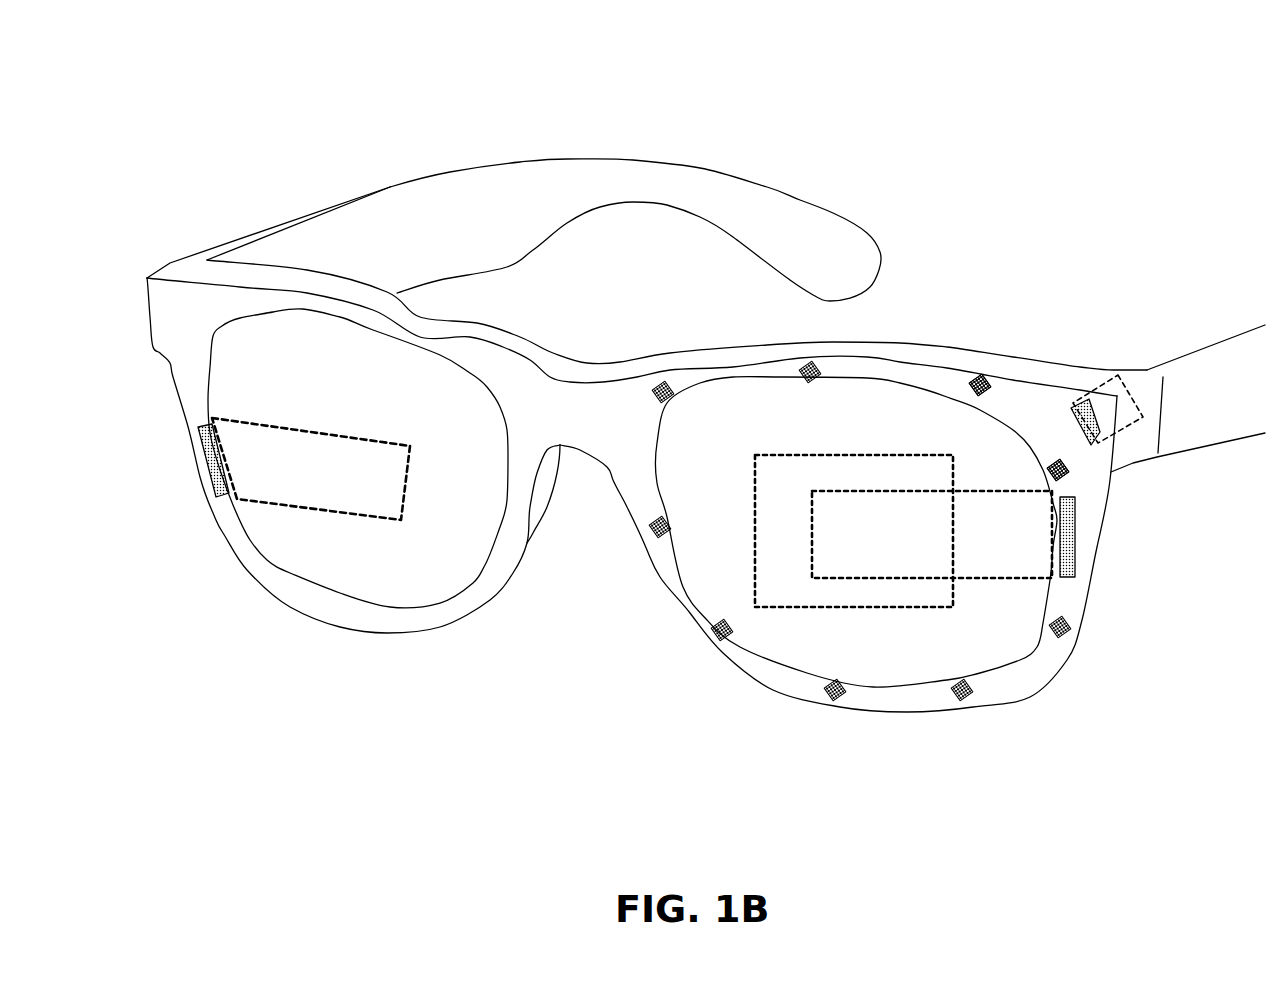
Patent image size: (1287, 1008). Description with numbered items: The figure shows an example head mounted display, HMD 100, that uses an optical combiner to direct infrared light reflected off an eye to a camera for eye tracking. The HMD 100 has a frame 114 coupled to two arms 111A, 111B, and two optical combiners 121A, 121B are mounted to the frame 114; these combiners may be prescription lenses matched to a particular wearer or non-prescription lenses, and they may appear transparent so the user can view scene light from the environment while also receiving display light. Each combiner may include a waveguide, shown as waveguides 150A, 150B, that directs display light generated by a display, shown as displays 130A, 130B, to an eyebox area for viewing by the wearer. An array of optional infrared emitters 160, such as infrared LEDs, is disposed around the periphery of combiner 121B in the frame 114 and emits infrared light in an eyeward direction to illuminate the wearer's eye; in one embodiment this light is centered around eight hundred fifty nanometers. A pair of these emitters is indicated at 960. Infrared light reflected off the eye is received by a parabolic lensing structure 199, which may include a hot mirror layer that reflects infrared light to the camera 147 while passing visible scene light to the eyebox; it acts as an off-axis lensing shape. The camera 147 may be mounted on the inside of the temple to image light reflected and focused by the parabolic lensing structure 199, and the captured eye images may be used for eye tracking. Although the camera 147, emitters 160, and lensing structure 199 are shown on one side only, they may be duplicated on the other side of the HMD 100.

The HMD 100 is at (1231, 27).
The frame 114 is at (200, 322).
The arm 111A is at (497, 244).
The arm 111B is at (1237, 409).
The optical combiner 121A is at (477, 502).
The optical combiner 121B is at (890, 419).
The waveguide 150A is at (243, 421).
The display 130A is at (210, 463).
The parabolic lensing structure 199 is at (757, 502).
The waveguide 150B is at (1050, 580).
The display 130B is at (1075, 540).
The camera 147 is at (1127, 385).
The infrared emitters 160 is at (797, 383).
The infrared emitter pair 960 is at (988, 405).